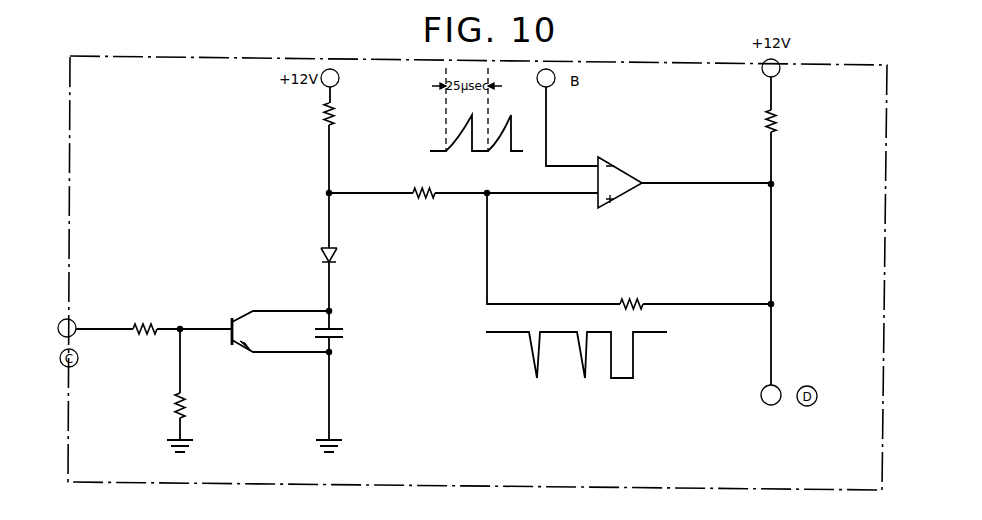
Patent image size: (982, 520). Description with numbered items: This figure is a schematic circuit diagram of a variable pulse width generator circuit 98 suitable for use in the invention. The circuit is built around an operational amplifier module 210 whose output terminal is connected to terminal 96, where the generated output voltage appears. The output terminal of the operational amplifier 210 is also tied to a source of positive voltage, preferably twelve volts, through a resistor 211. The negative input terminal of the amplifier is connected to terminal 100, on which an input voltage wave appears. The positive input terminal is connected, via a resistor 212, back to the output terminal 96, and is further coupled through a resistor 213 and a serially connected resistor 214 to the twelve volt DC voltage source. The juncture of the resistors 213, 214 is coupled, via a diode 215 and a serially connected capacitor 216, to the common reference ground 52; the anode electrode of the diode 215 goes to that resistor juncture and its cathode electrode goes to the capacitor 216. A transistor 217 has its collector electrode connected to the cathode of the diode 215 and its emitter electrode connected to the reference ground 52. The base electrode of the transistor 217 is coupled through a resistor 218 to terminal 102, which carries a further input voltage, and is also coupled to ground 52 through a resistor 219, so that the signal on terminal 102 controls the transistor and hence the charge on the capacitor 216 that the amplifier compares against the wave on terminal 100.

The variable pulse width generator circuit 98 is at (662, 65).
The terminal 102 is at (61, 323).
The terminal 100 is at (551, 86).
The terminal 96 is at (764, 405).
The common reference ground 52 is at (191, 442).
The operational amplifier module 210 is at (617, 163).
The resistor 211 is at (779, 123).
The resistor 212 is at (633, 297).
The resistor 213 is at (419, 201).
The resistor 214 is at (336, 117).
The diode 215 is at (338, 254).
The capacitor 216 is at (342, 336).
The transistor 217 is at (231, 318).
The resistor 218 is at (145, 318).
The resistor 219 is at (186, 406).